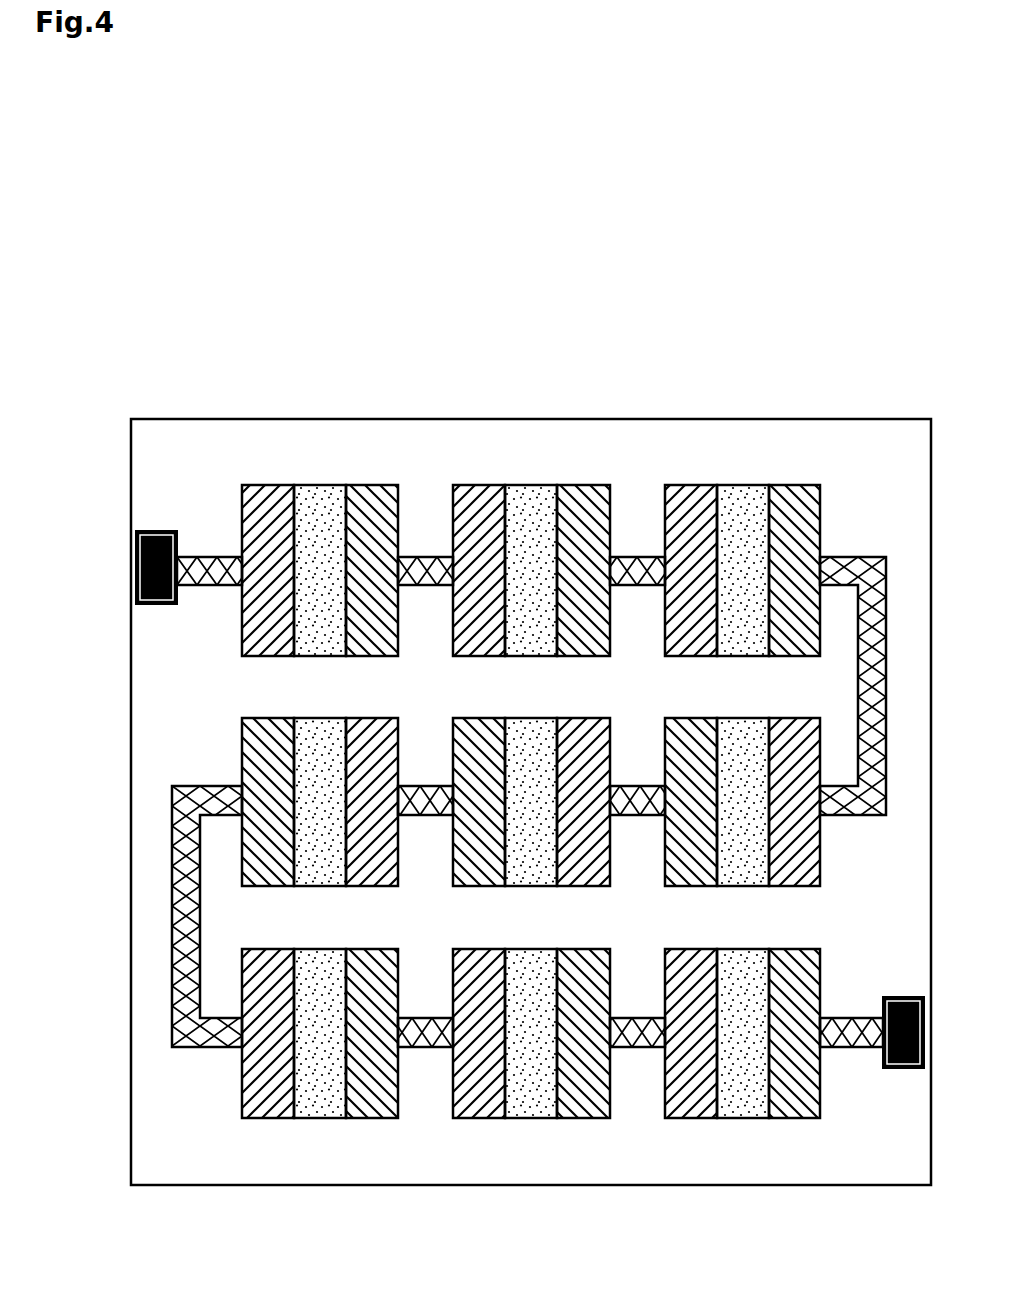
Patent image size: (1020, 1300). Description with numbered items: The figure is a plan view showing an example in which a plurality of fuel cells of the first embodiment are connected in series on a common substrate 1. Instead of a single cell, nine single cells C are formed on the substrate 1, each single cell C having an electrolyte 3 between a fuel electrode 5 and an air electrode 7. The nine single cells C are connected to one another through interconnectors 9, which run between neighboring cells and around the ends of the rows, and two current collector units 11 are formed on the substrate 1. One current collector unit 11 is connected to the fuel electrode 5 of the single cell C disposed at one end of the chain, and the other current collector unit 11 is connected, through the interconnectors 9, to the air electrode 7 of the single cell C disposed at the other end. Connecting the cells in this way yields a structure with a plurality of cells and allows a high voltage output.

The substrate 1 is at (890, 441).
The electrolyte 3 is at (320, 500).
The fuel electrode 5 is at (272, 510).
The air electrode 7 is at (377, 493).
The interconnector 9 is at (628, 1048).
The current collector unit 11 is at (150, 548).
The single cell C is at (578, 470).